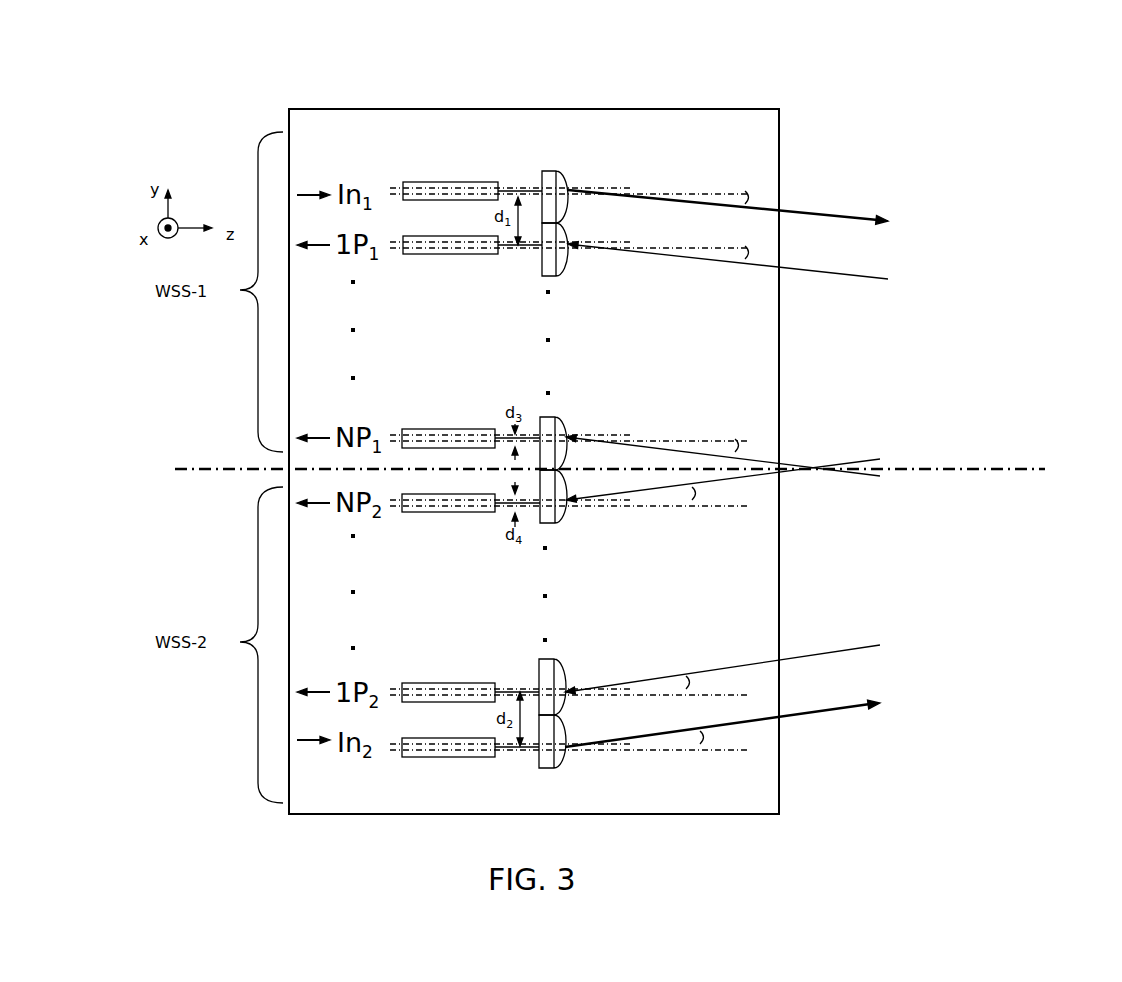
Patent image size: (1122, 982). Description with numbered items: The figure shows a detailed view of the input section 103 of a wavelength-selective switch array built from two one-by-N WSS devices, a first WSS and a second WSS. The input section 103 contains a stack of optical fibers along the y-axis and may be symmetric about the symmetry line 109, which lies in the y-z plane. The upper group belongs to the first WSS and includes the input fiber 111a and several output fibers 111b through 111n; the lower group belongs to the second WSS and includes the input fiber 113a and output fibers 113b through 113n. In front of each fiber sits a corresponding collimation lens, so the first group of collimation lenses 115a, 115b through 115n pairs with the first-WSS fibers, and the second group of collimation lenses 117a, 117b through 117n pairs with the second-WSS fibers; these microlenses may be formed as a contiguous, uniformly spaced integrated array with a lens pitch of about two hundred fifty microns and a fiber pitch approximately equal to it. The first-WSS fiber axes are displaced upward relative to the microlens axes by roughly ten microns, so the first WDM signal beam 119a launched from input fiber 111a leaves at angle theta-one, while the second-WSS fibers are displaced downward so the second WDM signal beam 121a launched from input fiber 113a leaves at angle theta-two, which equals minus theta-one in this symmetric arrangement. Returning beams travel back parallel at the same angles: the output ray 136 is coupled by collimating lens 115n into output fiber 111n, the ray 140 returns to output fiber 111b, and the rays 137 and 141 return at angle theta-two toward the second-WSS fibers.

The input section 103 is at (690, 108).
The symmetry line 109 is at (628, 468).
The input fiber 111a is at (413, 182).
The output fiber 111b is at (413, 254).
The output fiber 111n is at (410, 428).
The input fiber 113a is at (410, 757).
The output fiber 113b is at (412, 683).
The output fiber 113n is at (410, 512).
The collimation lens 115a is at (568, 173).
The collimation lens 115b is at (568, 276).
The collimation lens 115n is at (566, 418).
The collimation lens 117a is at (566, 768).
The collimation lens 117b is at (566, 661).
The collimation lens 117n is at (566, 523).
The first WDM signal beam 119a is at (858, 212).
The second WDM signal beam 121a is at (830, 712).
The output ray 136 is at (788, 456).
The ray 137 is at (790, 478).
The ray 140 is at (850, 278).
The ray 141 is at (830, 650).